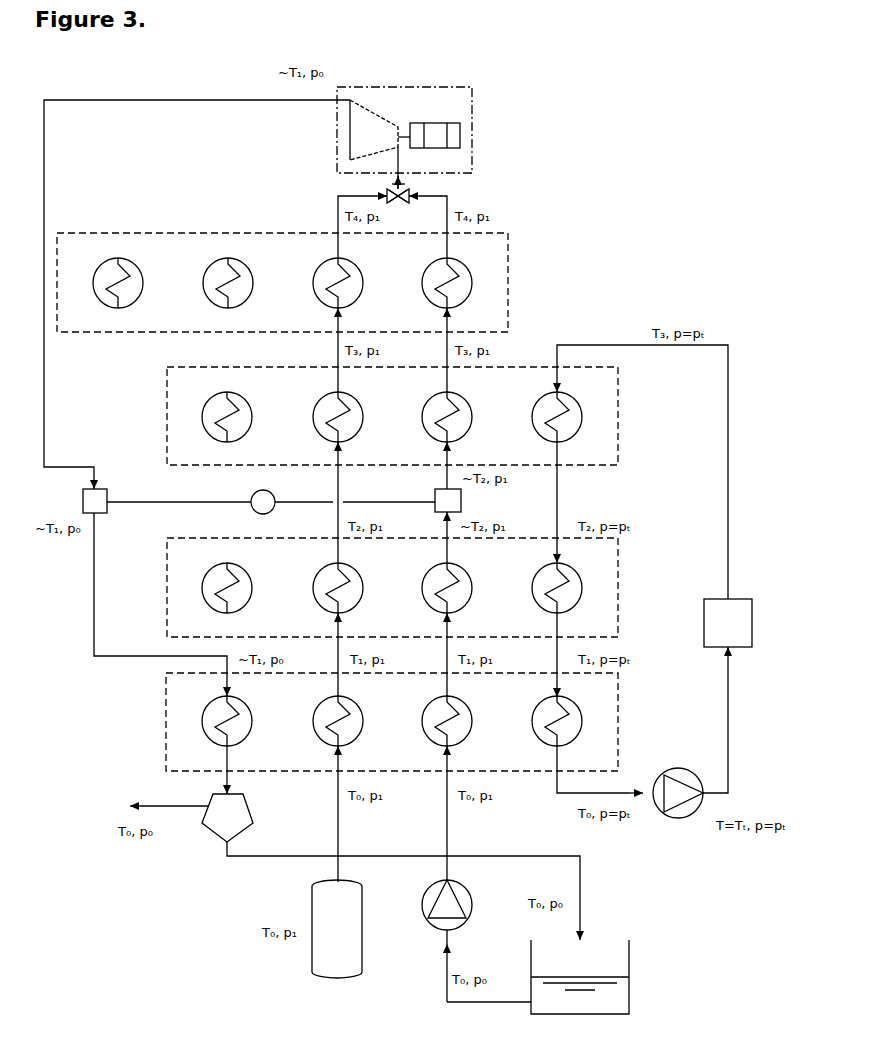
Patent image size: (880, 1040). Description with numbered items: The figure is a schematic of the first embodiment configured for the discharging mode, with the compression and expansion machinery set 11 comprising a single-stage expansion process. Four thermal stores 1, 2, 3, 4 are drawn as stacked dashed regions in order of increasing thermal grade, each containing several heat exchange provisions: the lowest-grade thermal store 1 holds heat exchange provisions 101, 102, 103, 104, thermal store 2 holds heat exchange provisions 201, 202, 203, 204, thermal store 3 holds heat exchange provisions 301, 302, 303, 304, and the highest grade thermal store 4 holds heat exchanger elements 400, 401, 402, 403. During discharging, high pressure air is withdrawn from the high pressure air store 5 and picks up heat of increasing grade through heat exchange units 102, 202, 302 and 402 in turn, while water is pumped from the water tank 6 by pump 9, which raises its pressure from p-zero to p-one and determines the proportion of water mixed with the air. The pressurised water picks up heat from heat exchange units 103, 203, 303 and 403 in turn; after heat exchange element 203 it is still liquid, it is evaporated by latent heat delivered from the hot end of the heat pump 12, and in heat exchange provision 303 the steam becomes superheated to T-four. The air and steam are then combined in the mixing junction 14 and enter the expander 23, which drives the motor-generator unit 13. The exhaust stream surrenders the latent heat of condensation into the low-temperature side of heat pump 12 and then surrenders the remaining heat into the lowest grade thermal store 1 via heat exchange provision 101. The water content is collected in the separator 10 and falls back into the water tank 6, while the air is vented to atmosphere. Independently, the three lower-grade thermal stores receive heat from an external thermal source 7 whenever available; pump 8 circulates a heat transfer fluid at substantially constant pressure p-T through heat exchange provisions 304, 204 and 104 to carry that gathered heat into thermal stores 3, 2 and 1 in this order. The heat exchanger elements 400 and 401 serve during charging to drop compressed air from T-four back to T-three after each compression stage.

The thermal store 1 is at (402, 722).
The thermal store 2 is at (400, 587).
The thermal store 3 is at (400, 416).
The thermal store 4 is at (290, 282).
The high pressure air store 5 is at (329, 931).
The water tank 6 is at (590, 977).
The means of collecting low grade heat 7 is at (735, 623).
The pump 8 is at (678, 808).
The pump 9 is at (467, 941).
The separator 10 is at (223, 825).
The compression and expansion machinery set 11 is at (404, 120).
The heat pump 12 is at (263, 511).
The motor-generator unit 13 is at (429, 146).
The mixing junction 14 is at (414, 188).
The expander 23 is at (374, 144).
The heat exchange provision 101 is at (220, 729).
The heat exchange provision 102 is at (331, 729).
The heat exchange provision 103 is at (440, 729).
The heat exchange provision 104 is at (550, 729).
The heat exchange provision 201 is at (214, 596).
The heat exchange provision 202 is at (328, 596).
The heat exchange provision 203 is at (438, 596).
The heat exchange provision 204 is at (547, 596).
The heat exchange provision 301 is at (214, 425).
The heat exchange provision 302 is at (328, 425).
The heat exchange provision 303 is at (438, 425).
The heat exchange provision 304 is at (547, 425).
The heat exchanger element 400 is at (104, 291).
The heat exchanger element 401 is at (214, 291).
The heat exchange unit 402 is at (328, 291).
The heat exchange unit 403 is at (433, 291).